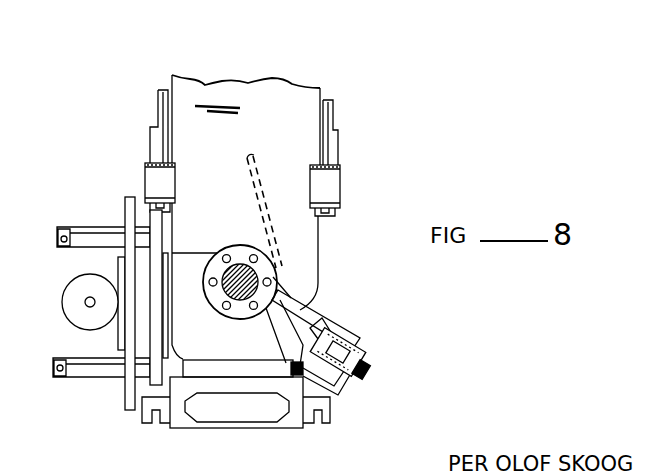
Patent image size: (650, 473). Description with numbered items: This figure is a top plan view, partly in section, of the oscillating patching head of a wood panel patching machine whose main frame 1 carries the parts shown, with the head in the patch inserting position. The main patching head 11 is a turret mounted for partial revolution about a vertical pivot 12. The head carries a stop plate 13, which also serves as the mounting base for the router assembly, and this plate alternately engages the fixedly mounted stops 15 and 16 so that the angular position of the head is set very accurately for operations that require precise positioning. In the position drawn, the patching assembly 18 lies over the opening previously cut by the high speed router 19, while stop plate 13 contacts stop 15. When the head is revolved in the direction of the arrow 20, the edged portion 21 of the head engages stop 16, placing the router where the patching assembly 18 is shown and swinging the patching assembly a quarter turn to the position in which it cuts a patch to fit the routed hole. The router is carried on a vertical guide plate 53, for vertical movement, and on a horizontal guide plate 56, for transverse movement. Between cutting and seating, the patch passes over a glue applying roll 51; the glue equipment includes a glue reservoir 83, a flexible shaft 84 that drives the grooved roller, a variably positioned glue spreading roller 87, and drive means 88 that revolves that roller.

The main frame 1 is at (294, 131).
The main patching head 11 is at (260, 352).
The vertical pivot 12 is at (242, 266).
The stop plate 13 is at (163, 236).
The fixedly mounted stop 15 is at (150, 215).
The fixedly mounted stop 16 is at (323, 219).
The patching assembly 18 is at (256, 436).
The high speed router 19 is at (72, 303).
The arrow 20 is at (192, 282).
The edged portion 21 is at (303, 373).
The glue applying roll 51 is at (320, 395).
The vertical guide plate 53 is at (124, 254).
The horizontal guide plate 56 is at (125, 385).
The glue reservoir 83 is at (332, 380).
The flexible shaft 84 is at (246, 182).
The glue spreading roller 87 is at (353, 342).
The drive means 88 is at (366, 369).